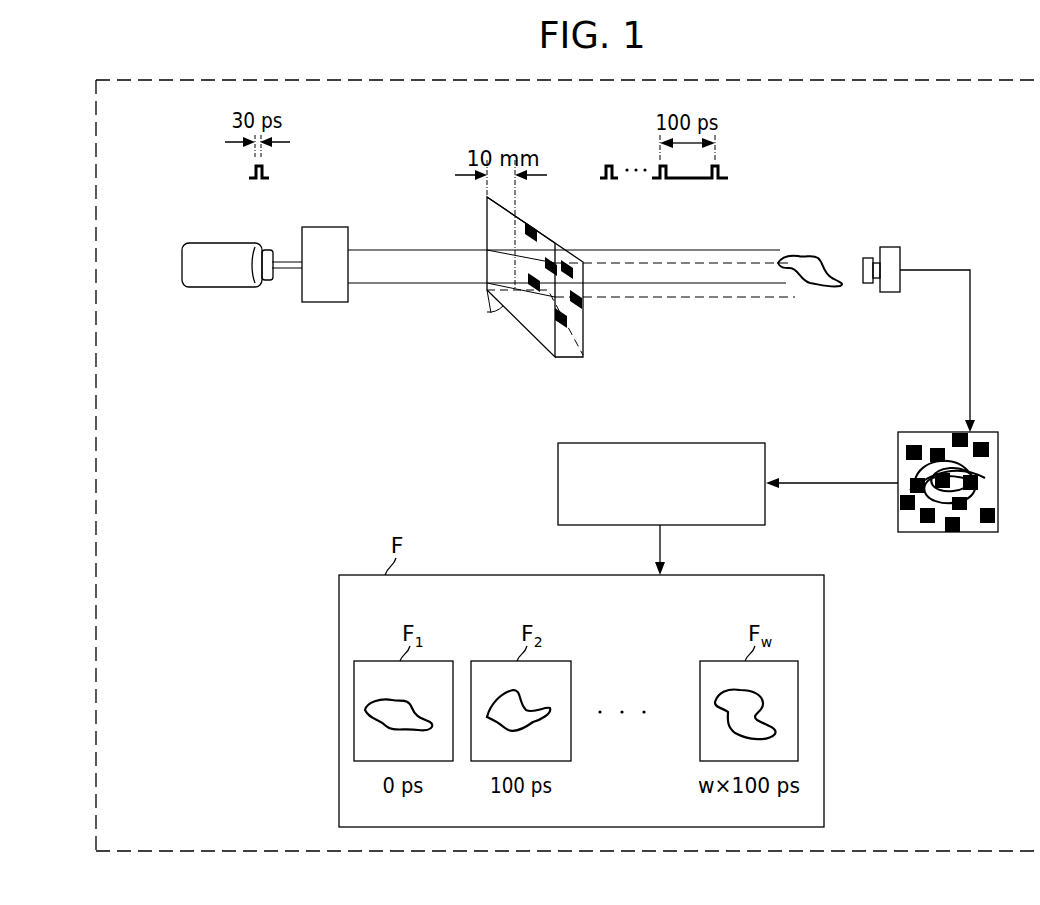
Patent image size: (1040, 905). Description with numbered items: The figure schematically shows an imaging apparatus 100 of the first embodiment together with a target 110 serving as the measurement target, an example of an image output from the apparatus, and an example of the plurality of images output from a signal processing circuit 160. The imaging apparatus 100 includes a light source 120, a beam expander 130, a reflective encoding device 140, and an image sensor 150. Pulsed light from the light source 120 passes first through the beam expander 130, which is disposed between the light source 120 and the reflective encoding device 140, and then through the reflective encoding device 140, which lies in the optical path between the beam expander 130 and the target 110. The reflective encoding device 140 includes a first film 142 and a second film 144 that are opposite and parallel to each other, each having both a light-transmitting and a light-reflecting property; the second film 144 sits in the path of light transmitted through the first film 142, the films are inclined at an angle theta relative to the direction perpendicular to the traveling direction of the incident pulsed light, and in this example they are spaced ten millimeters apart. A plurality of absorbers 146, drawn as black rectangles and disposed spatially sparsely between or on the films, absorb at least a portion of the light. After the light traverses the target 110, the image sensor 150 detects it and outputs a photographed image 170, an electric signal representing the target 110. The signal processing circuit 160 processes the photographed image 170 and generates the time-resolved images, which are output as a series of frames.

The imaging apparatus 100 is at (828, 146).
The target 110 is at (815, 288).
The light source 120 is at (228, 288).
The beam expander 130 is at (335, 304).
The reflective encoding device 140 is at (532, 305).
The first film 142 is at (497, 228).
The second film 144 is at (552, 223).
The absorbers 146 is at (560, 318).
The image sensor 150 is at (890, 294).
The signal processing circuit 160 is at (558, 483).
The photographed image 170 is at (950, 535).